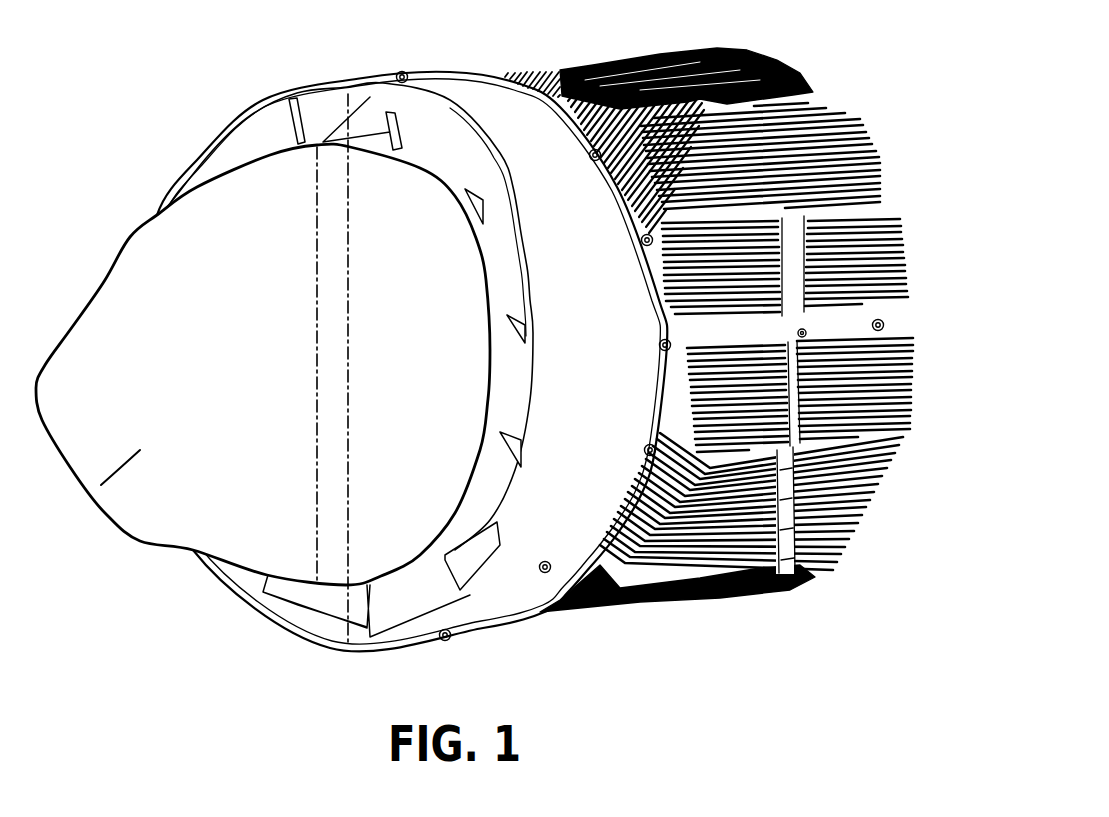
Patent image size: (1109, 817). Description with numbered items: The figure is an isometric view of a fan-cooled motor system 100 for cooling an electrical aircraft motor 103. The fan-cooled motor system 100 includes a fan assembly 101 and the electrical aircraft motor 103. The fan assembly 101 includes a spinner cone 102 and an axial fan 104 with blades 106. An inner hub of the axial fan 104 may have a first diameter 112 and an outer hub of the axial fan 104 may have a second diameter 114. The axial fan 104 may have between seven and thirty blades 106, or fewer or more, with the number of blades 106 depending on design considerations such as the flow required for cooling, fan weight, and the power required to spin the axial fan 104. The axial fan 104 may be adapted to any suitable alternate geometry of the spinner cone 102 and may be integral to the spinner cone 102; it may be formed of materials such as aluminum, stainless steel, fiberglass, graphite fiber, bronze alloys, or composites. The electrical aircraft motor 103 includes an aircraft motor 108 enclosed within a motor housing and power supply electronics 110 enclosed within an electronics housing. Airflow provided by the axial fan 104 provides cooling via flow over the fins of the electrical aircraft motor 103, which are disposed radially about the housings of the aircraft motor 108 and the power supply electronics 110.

The fan-cooled motor system 100 is at (471, 354).
The fan assembly 101 is at (471, 354).
The spinner cone 102 is at (101, 485).
The electrical aircraft motor 103 is at (713, 502).
The axial fan 104 is at (513, 613).
The blades 106 is at (307, 585).
The aircraft motor 108 is at (593, 65).
The power supply electronics 110 is at (787, 71).
The first diameter 112 is at (317, 408).
The second diameter 114 is at (348, 392).